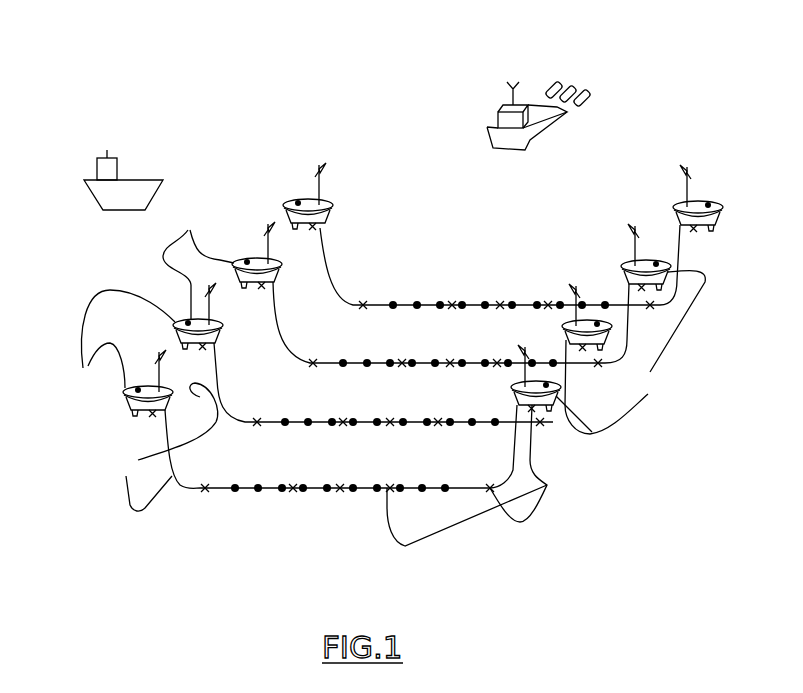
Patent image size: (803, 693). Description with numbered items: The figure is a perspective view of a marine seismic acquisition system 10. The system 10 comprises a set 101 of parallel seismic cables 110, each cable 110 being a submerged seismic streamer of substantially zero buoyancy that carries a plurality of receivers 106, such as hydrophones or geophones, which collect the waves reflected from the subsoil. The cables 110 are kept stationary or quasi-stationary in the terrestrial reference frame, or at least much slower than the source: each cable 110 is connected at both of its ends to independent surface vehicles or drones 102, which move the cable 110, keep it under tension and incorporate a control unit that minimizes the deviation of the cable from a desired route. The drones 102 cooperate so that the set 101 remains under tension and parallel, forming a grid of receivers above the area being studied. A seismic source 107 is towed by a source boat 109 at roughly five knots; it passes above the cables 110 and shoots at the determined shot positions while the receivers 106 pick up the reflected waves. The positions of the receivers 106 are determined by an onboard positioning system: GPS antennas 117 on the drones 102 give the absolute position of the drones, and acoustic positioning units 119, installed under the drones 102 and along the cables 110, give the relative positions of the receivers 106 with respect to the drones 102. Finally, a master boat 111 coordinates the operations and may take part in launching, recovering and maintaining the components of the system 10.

The marine seismic acquisition system 10 is at (120, 68).
The set of parallel seismic cables 101 is at (364, 530).
The drone 102 is at (381, 352).
The receiver 106 is at (513, 305).
The seismic source 107 is at (588, 77).
The source boat 109 is at (508, 142).
The seismic cable 110 is at (159, 447).
The master boat 111 is at (121, 203).
The GPS antenna 117 is at (198, 263).
The acoustic positioning unit 119 is at (493, 475).